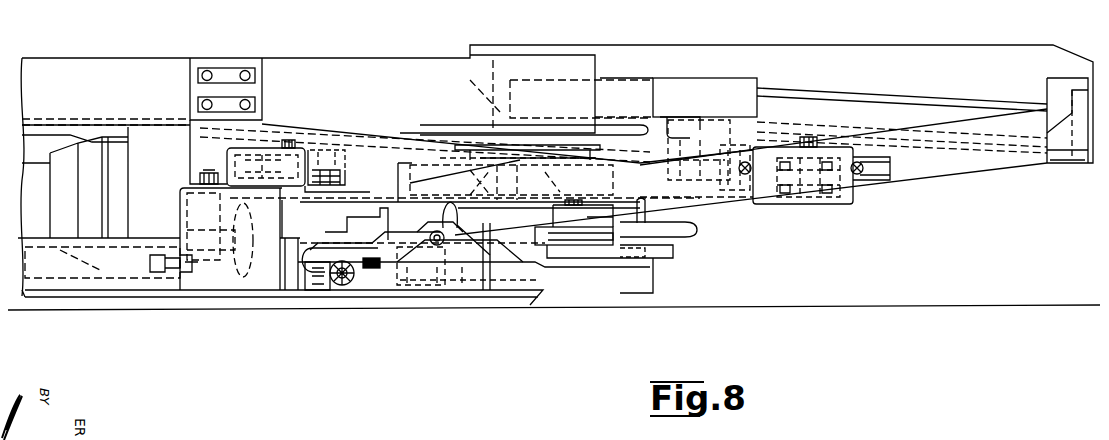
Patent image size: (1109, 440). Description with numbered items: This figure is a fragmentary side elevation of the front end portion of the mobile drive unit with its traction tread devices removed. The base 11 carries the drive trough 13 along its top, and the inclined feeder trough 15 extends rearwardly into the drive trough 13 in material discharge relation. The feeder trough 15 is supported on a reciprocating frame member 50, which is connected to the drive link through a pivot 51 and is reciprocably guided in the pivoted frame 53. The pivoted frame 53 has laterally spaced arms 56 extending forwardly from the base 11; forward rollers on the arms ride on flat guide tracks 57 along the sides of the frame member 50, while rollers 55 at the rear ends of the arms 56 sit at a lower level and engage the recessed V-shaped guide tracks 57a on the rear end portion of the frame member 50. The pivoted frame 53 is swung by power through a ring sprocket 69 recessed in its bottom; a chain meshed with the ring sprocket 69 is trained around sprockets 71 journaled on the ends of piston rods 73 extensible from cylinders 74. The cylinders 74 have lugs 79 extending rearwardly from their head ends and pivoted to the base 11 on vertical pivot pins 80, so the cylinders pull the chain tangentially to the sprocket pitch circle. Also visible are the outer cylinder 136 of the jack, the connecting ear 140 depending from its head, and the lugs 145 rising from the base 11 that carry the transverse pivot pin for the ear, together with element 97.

The base 11 is at (533, 303).
The drive trough 13 is at (358, 58).
The feeder trough 15 is at (943, 45).
The reciprocating frame member 50 is at (907, 173).
The pivot 51 is at (700, 128).
The pivoted frame 53 is at (753, 207).
The rollers 55 is at (487, 193).
The arms 56 is at (793, 205).
The flat guide tracks 57 is at (873, 177).
The V-shaped guide tracks 57a is at (419, 172).
The ring sprocket 69 is at (697, 237).
The sprockets 71 is at (578, 242).
The piston rods 73 is at (553, 262).
The cylinders 74 is at (378, 202).
The lugs 79 is at (248, 215).
The vertical pivot pins 80 is at (185, 186).
The cam 97 is at (380, 257).
The outer cylinder 136 is at (300, 247).
The connecting ear 140 is at (323, 282).
The lugs 145 is at (312, 272).